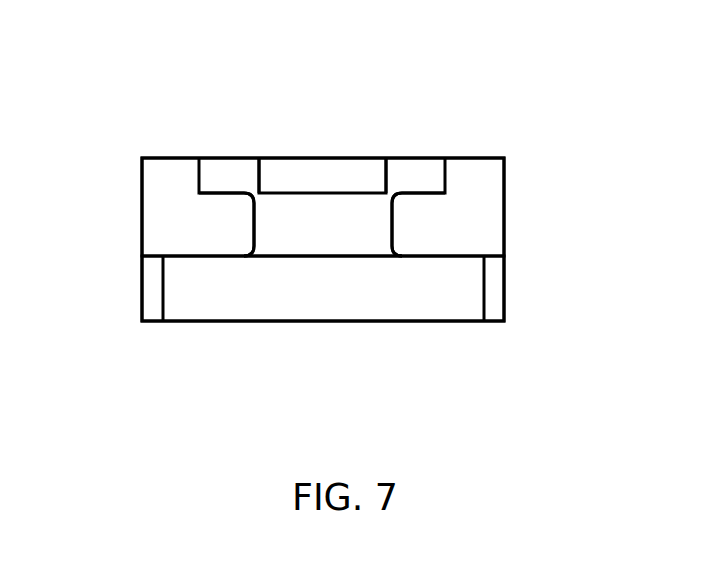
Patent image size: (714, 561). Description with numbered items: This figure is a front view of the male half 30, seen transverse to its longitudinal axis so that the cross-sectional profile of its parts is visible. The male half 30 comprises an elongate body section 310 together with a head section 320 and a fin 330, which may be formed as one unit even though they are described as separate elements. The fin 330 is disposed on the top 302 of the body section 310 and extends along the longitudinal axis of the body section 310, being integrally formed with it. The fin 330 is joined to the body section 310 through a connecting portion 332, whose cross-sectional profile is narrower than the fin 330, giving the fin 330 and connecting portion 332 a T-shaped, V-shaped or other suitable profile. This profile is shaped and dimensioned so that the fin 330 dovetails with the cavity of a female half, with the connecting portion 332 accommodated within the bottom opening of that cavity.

The male half 30 is at (229, 125).
The top 302 is at (445, 252).
The body section 310 is at (408, 289).
The head section 320 is at (157, 232).
The fin 330 is at (350, 177).
The connecting portion 332 is at (267, 235).